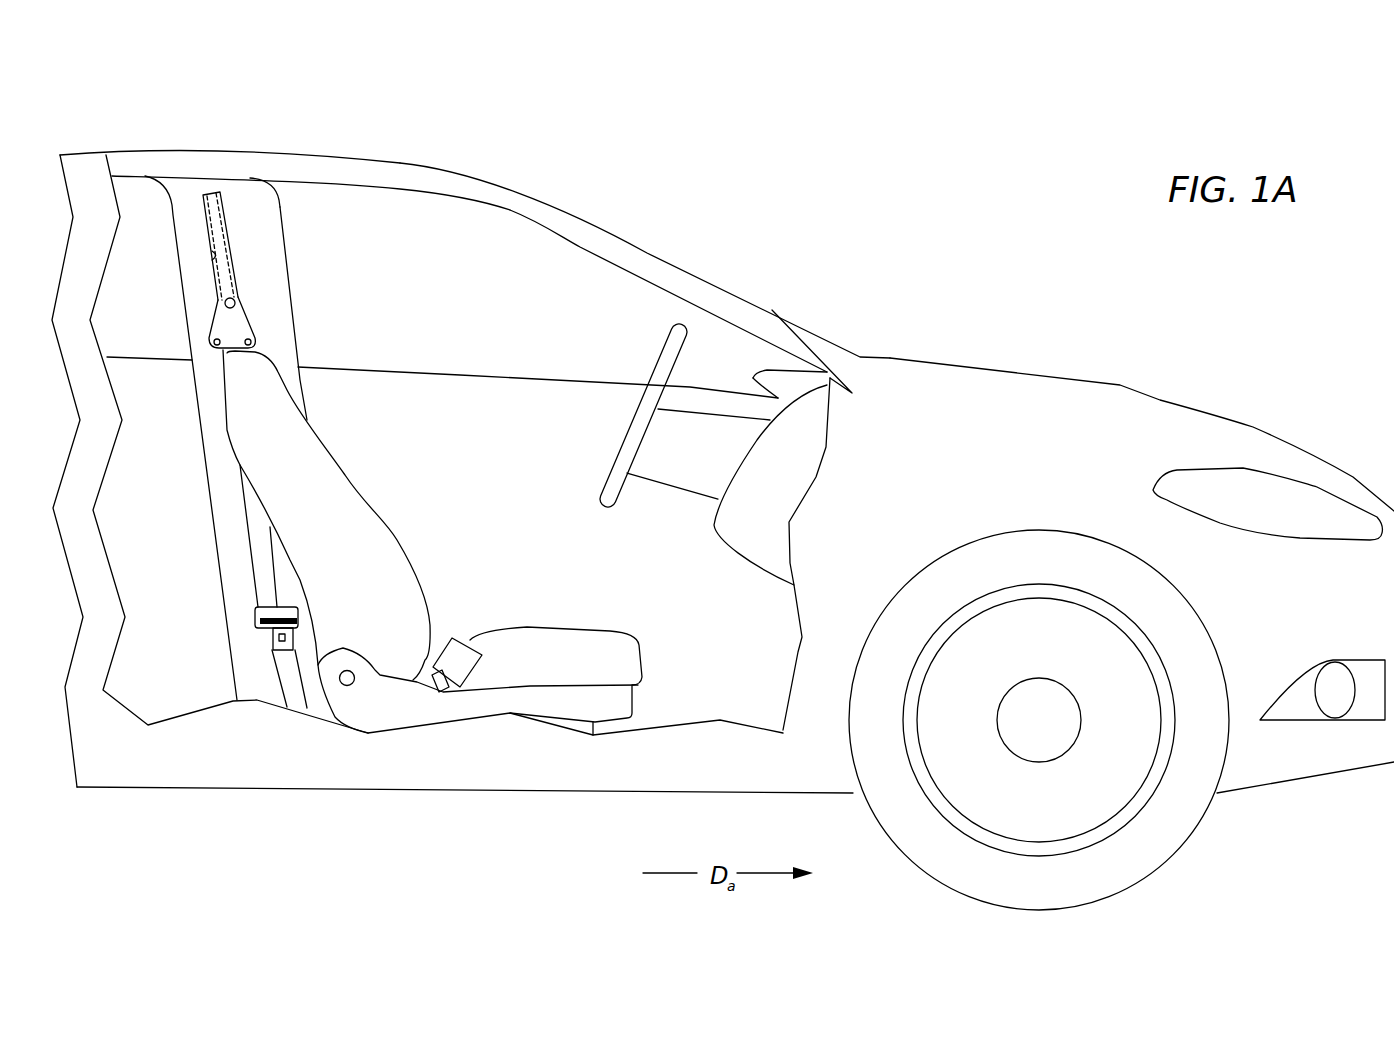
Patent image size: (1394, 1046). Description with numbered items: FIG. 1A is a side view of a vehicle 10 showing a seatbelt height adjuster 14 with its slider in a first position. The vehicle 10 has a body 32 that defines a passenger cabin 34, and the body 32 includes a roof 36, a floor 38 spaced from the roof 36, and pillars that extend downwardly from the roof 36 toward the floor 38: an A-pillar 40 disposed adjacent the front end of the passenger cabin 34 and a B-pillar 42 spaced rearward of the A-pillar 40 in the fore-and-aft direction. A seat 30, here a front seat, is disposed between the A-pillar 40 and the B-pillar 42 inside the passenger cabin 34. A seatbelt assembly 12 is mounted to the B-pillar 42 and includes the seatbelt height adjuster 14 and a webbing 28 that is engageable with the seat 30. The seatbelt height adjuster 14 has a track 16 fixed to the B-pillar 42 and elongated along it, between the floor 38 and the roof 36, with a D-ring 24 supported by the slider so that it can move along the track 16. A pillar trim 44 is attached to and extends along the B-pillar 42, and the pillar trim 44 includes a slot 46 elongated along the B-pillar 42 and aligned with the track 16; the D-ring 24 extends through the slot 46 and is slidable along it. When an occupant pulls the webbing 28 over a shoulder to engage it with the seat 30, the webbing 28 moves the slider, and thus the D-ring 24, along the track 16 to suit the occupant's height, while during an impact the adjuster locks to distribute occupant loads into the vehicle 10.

The vehicle 10 is at (882, 202).
The seatbelt assembly 12 is at (190, 223).
The seatbelt height adjuster 14 is at (232, 246).
The track 16 is at (228, 205).
The D-ring 24 is at (213, 327).
The webbing 28 is at (258, 580).
The seat 30 is at (226, 411).
The body 32 is at (1117, 385).
The passenger cabin 34 is at (433, 248).
The roof 36 is at (137, 152).
The floor 38 is at (454, 792).
The A-pillar 40 is at (638, 236).
The B-pillar 42 is at (287, 312).
The pillar trim 44 is at (265, 279).
The slot 46 is at (216, 258).